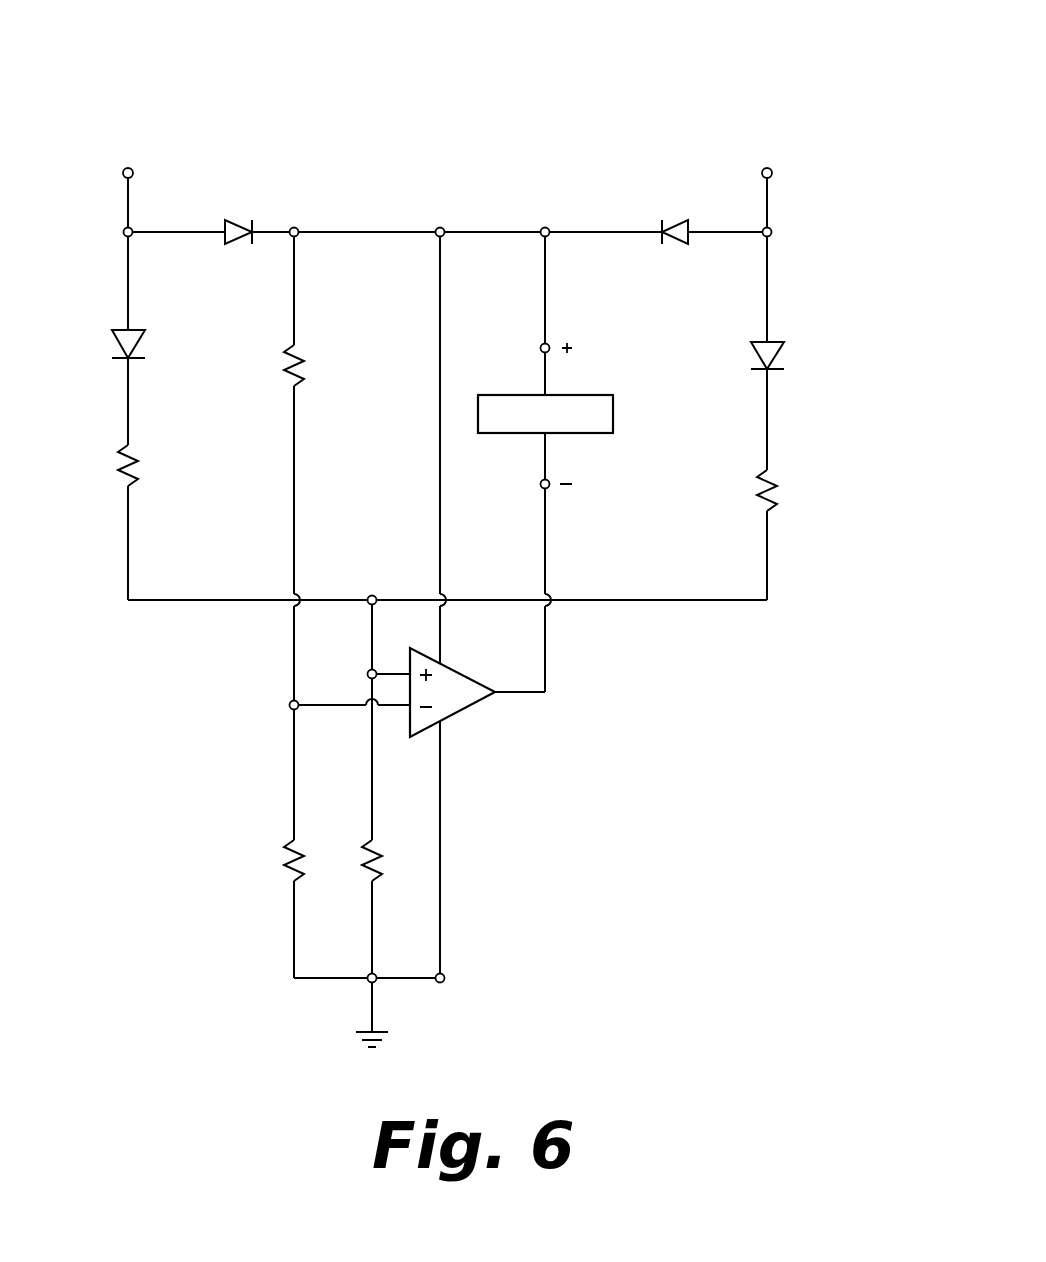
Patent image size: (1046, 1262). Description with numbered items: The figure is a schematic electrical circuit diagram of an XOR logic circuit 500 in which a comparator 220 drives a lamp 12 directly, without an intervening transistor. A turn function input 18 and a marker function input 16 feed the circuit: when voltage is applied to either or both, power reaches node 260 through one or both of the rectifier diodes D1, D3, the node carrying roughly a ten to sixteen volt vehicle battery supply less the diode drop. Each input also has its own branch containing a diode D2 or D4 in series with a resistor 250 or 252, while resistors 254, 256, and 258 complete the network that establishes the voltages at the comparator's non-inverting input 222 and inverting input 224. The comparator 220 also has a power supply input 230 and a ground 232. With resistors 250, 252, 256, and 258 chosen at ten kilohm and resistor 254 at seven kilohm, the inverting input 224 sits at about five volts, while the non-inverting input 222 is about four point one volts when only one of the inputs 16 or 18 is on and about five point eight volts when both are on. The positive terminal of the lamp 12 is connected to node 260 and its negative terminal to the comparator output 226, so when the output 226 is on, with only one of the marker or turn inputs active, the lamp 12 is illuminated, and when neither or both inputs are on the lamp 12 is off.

The XOR logic circuit 500 is at (684, 93).
The turn function input 18 is at (128, 203).
The marker function input 16 is at (767, 215).
The lamp 12 is at (613, 410).
The node 260 is at (442, 228).
The resistor 250 is at (130, 456).
The resistor 252 is at (768, 484).
The resistor 254 is at (372, 870).
The resistor 256 is at (296, 352).
The resistor 258 is at (290, 846).
The comparator 220 is at (458, 713).
The non-inverting input 222 is at (410, 672).
The inverting input 224 is at (410, 712).
The output 226 is at (496, 693).
The power supply input 230 is at (442, 662).
The ground 232 is at (442, 726).
The rectifier diode D1 is at (242, 258).
The diode D2 is at (146, 357).
The rectifier diode D3 is at (680, 260).
The diode D4 is at (786, 368).